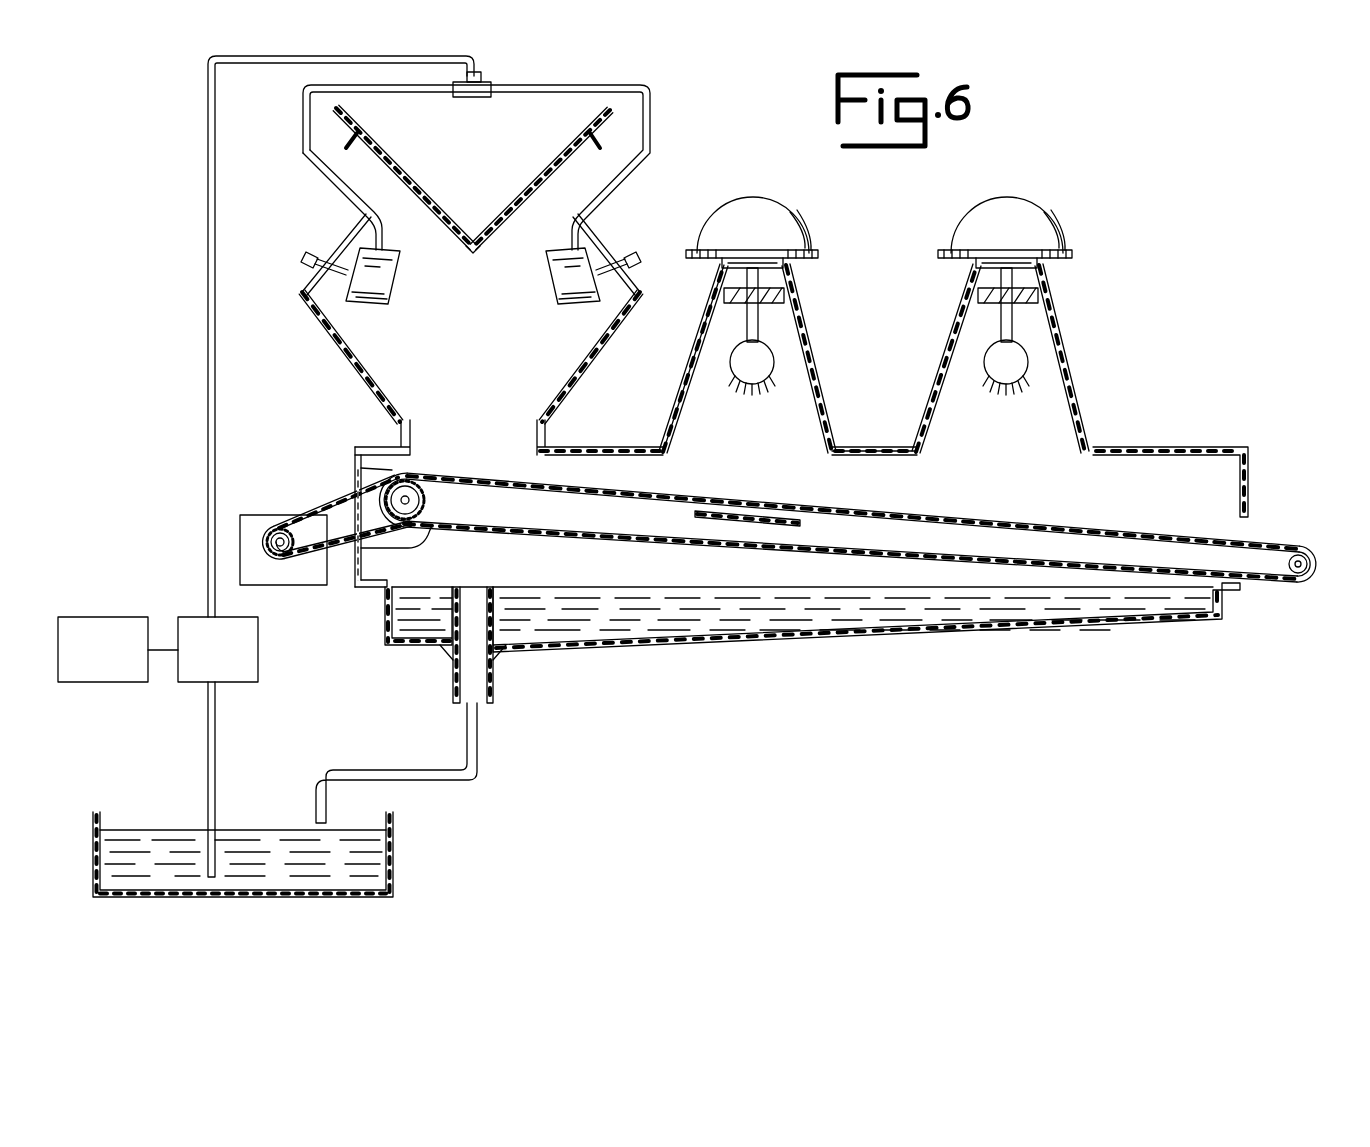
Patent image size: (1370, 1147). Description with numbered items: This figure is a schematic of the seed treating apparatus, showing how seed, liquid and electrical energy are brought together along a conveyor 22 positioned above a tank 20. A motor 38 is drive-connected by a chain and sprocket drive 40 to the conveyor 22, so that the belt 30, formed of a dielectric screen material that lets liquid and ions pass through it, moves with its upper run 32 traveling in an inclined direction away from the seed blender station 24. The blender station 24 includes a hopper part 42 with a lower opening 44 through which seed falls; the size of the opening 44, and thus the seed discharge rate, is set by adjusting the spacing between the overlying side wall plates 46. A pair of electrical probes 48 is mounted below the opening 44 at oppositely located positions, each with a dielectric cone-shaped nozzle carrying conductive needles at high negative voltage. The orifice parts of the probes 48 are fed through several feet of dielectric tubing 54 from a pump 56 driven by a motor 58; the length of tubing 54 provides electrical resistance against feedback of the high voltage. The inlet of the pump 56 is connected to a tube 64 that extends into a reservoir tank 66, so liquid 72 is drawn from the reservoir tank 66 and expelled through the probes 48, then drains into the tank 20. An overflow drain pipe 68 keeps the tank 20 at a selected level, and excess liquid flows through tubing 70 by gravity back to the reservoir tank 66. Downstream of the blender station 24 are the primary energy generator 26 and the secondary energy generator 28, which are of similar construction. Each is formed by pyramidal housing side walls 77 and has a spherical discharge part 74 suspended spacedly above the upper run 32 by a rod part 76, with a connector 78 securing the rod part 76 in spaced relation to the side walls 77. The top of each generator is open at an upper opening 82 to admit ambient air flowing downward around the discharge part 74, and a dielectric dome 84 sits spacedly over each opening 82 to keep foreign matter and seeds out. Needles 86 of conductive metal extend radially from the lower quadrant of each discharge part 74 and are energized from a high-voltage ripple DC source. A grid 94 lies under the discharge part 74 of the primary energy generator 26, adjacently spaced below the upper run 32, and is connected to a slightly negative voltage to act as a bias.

The tank 20 is at (837, 637).
The conveyor 22 is at (848, 525).
The seed blender station 24 is at (318, 328).
The primary energy generator 26 is at (830, 250).
The secondary energy generator 28 is at (1082, 244).
The belt 30 is at (597, 538).
The upper run 32 is at (888, 515).
The motor 38 is at (258, 514).
The chain and sprocket drive 40 is at (330, 503).
The hopper part 42 is at (553, 186).
The lower opening 44 is at (460, 253).
The side wall plates 46 is at (392, 156).
The electrical probes 48 is at (388, 306).
The dielectric tubing 54 is at (302, 118).
The pump 56 is at (260, 656).
The motor 58 is at (125, 683).
The tube 64 is at (215, 757).
The reservoir tank 66 is at (362, 897).
The overflow drain pipe 68 is at (498, 597).
The tubing 70 is at (478, 749).
The liquid 72 is at (680, 602).
The spherical discharge part 74 is at (772, 375).
The rod part 76 is at (747, 333).
The pyramidal housing side walls 77 is at (687, 373).
The connector 78 is at (783, 297).
The upper opening 82 is at (745, 263).
The dielectric dome 84 is at (729, 210).
The needles 86 is at (748, 382).
The grid 94 is at (767, 527).